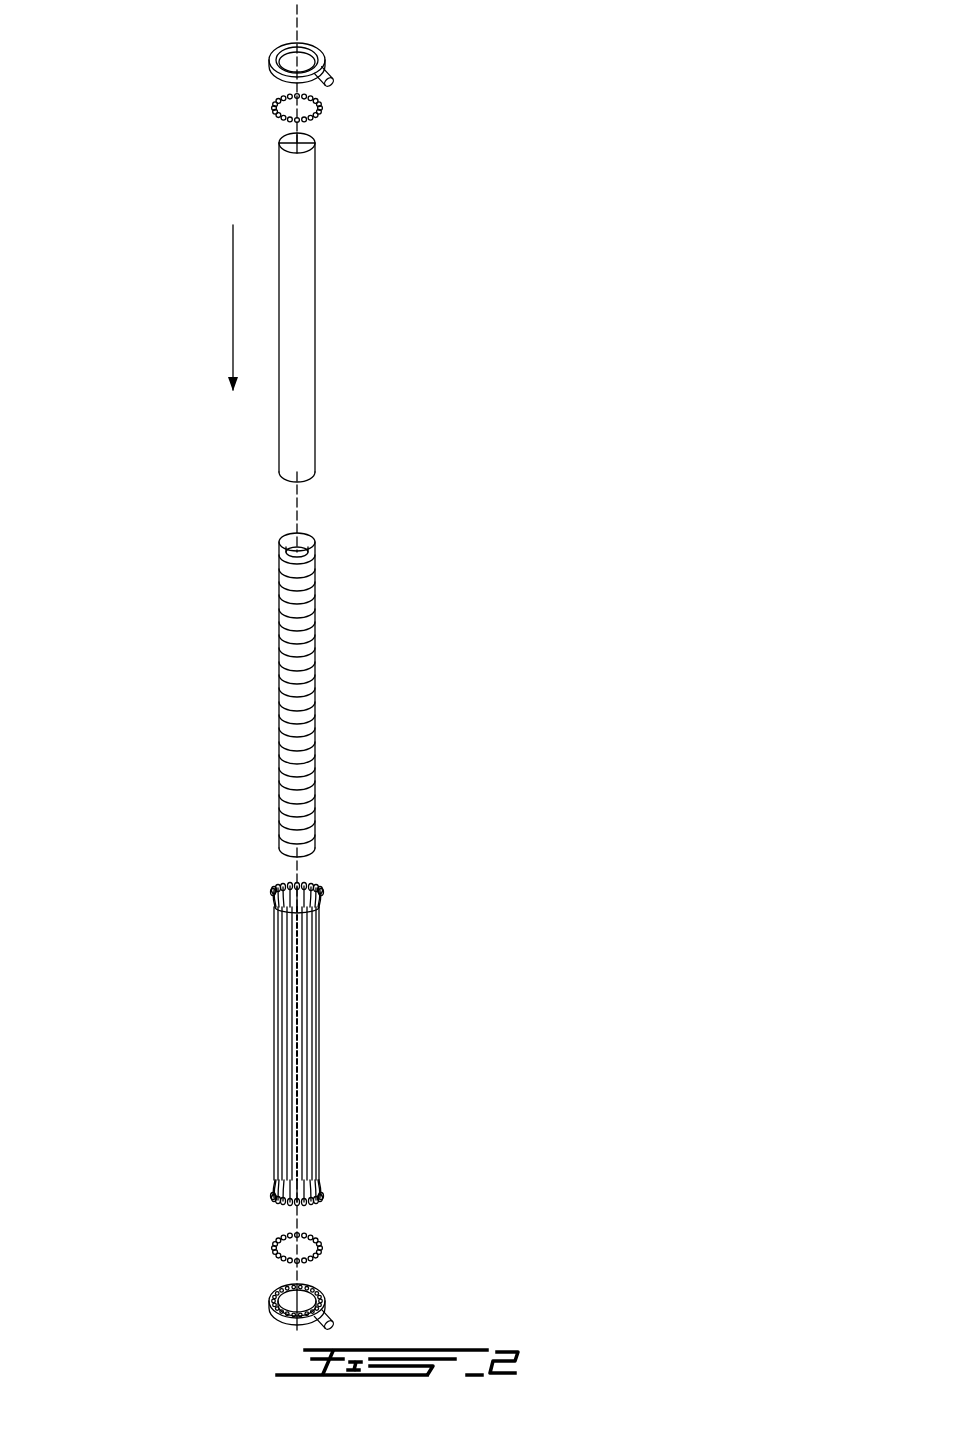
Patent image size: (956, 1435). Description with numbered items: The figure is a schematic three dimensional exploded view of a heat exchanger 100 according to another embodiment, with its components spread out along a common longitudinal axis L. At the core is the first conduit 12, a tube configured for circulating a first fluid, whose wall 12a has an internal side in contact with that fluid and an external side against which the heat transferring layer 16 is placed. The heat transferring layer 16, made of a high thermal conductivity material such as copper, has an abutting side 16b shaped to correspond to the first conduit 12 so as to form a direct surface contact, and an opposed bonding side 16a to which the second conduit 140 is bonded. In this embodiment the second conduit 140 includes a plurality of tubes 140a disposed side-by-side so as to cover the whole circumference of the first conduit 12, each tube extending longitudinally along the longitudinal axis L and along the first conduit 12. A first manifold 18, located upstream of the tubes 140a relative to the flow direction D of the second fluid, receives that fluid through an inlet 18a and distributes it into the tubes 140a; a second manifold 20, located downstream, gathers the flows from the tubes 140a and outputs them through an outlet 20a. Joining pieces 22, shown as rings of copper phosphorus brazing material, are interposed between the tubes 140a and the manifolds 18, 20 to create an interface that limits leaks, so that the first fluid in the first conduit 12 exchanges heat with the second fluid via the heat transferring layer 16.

The heat exchanger 100 is at (540, 162).
The first conduit 12 is at (372, 307).
The wall 12a is at (316, 363).
The heat transferring layer 16 is at (385, 680).
The bonding side 16a is at (316, 768).
The abutting side 16b is at (304, 545).
The first manifold 18 is at (305, 59).
The inlet 18a is at (333, 86).
The second manifold 20 is at (306, 1291).
The outlet 20a is at (333, 1326).
The joining pieces 22 is at (329, 113).
The second conduit 140 is at (387, 1044).
The tubes 140a is at (314, 930).
The longitudinal axis L is at (297, 12).
The flow direction D is at (233, 290).